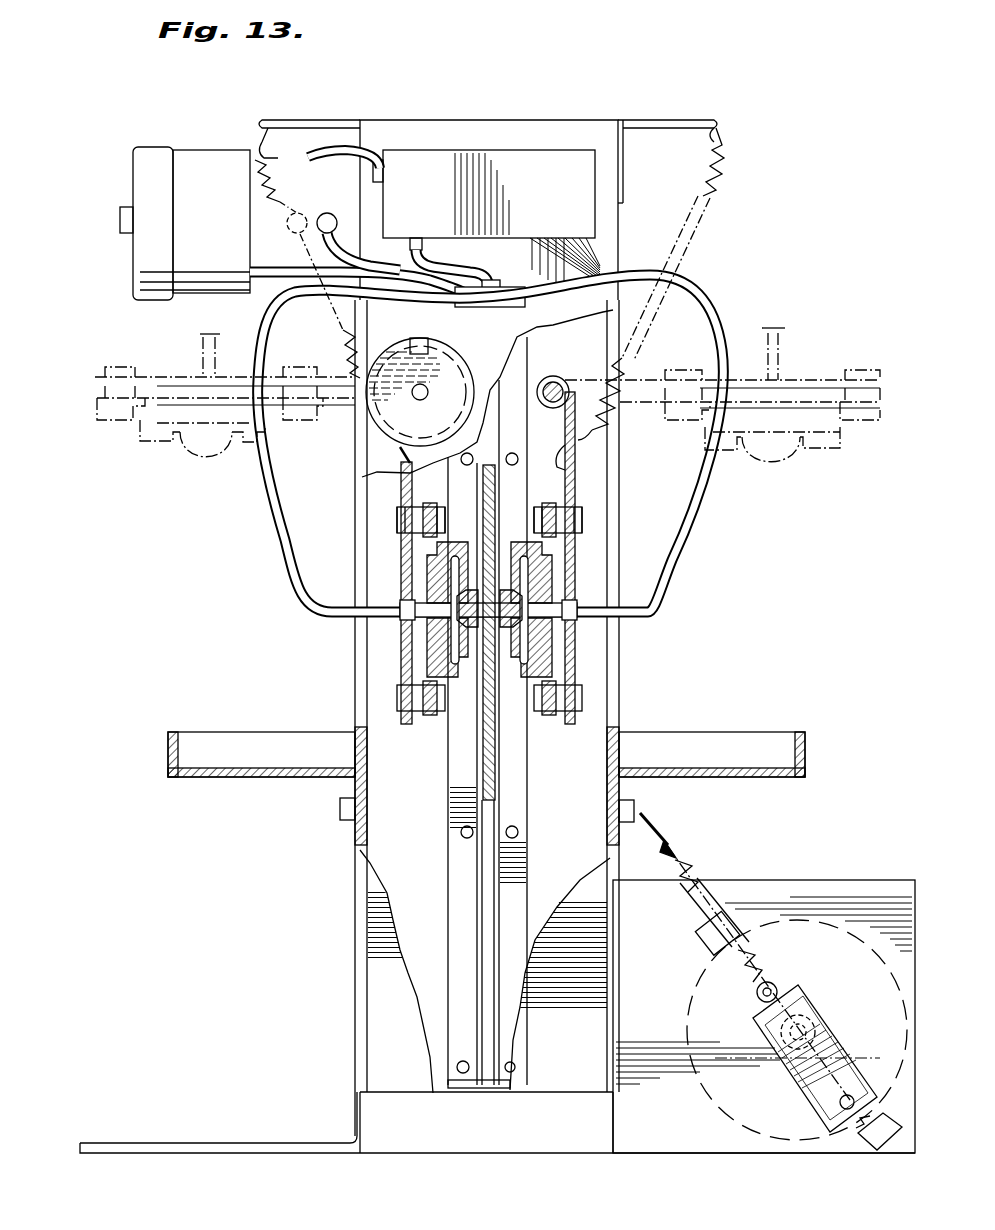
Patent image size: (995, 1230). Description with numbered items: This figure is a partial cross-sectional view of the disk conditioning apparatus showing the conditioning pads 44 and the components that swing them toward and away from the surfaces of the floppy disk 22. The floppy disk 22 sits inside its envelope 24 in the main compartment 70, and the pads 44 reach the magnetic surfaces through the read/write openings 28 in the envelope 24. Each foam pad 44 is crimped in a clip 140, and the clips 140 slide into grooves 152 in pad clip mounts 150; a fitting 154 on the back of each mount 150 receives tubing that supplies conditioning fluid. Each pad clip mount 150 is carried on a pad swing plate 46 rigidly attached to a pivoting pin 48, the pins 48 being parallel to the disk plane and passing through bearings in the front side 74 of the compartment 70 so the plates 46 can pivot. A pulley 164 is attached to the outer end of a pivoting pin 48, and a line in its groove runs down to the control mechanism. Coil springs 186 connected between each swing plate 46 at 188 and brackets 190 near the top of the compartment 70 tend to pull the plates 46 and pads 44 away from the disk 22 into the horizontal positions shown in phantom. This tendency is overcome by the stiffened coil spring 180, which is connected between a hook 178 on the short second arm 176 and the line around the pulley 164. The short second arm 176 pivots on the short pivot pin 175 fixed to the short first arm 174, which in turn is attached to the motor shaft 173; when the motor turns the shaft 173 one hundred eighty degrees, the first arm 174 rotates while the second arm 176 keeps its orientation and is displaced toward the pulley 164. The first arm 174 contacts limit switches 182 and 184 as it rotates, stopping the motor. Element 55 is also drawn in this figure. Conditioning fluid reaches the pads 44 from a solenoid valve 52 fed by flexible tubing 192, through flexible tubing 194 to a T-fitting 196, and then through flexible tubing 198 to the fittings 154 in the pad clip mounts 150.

The floppy disk 22 is at (483, 772).
The envelope 24 is at (483, 865).
The read/write openings 28 is at (505, 620).
The fluid conditioning pads 44 is at (452, 592).
The pad swing plates 46 is at (400, 497).
The pivoting pins 48 is at (428, 390).
The solenoid valve 52 is at (190, 150).
The shelf 55 is at (220, 762).
The main compartment 70 is at (352, 850).
The front side 74 is at (378, 1052).
The clip 140 is at (435, 565).
The pad clip mounts 150 is at (438, 640).
The grooves 152 is at (428, 540).
The fitting 154 is at (420, 612).
The pulley 164 is at (382, 425).
The shaft 173 is at (805, 1022).
The short first arm 174 is at (816, 1030).
The short pivot pin 175 is at (840, 1104).
The short second arm 176 is at (765, 1022).
The hook 178 is at (774, 984).
The stiffened coil spring 180 is at (688, 868).
The limit switch 182 is at (723, 927).
The limit switch 184 is at (875, 1140).
The coil springs 186 is at (342, 350).
The spring connection point on pad swing plate 188 is at (578, 440).
The brackets 190 is at (288, 118).
The flexible tubing 192 is at (320, 155).
The flexible tubing 194 is at (388, 272).
The T-fitting 196 is at (512, 292).
The flexible tubing 198 is at (275, 515).